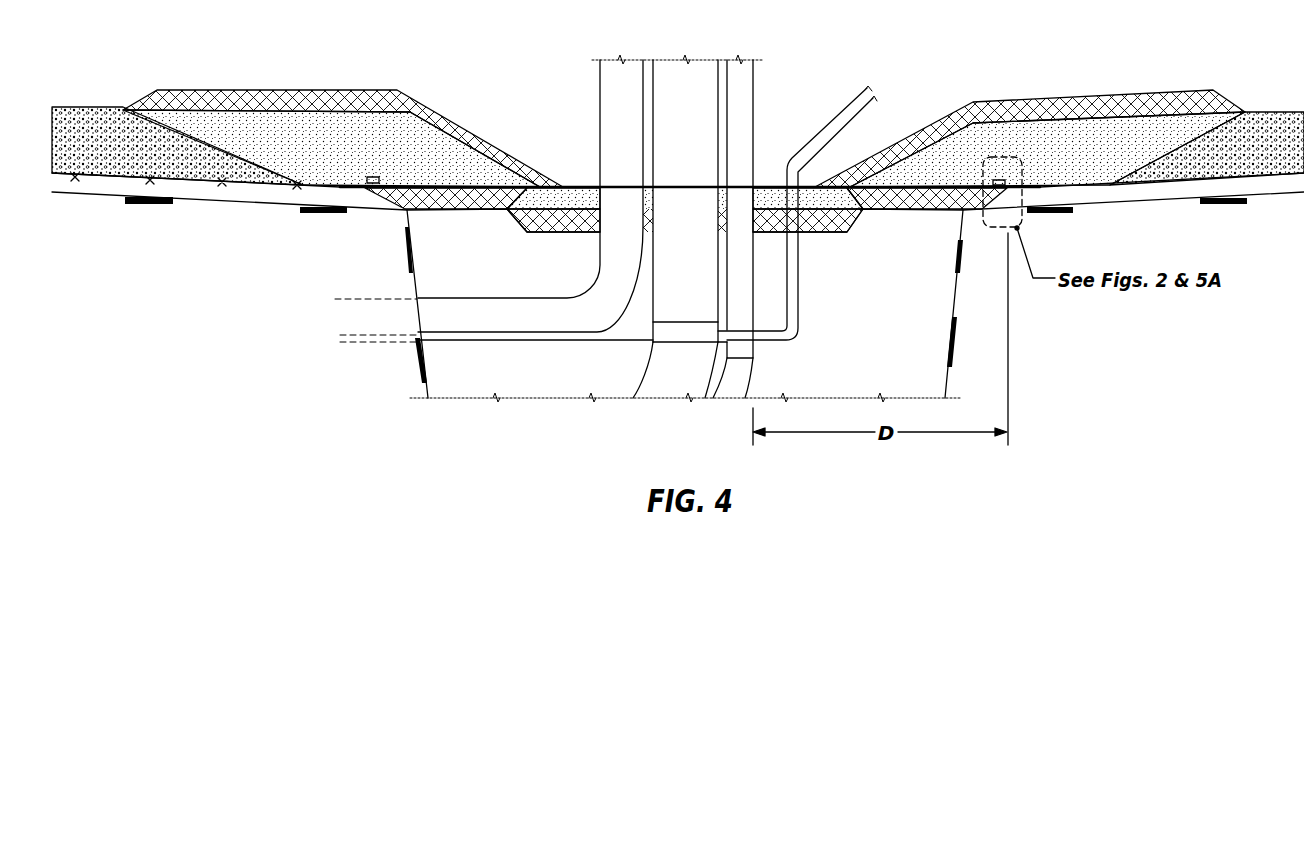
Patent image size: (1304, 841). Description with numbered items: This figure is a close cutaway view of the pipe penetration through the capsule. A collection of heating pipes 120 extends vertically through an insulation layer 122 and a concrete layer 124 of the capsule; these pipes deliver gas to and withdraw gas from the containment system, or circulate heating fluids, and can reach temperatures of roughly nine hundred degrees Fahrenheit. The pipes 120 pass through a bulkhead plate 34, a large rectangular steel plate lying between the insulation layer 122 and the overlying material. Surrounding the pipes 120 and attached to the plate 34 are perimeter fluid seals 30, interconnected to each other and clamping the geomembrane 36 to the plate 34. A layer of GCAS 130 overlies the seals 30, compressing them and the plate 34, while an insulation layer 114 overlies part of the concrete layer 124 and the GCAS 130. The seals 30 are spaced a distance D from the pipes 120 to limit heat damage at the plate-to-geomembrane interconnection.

The perimeter fluid seals 30 is at (373, 199).
The bulkhead plate 34 is at (572, 185).
The geomembrane 36 is at (355, 190).
The insulation layer 114 is at (440, 122).
The heating pipes 120 is at (821, 276).
The insulation layer 122 is at (563, 233).
The concrete layer 124 is at (585, 195).
The layer of GCAS 130 is at (297, 133).